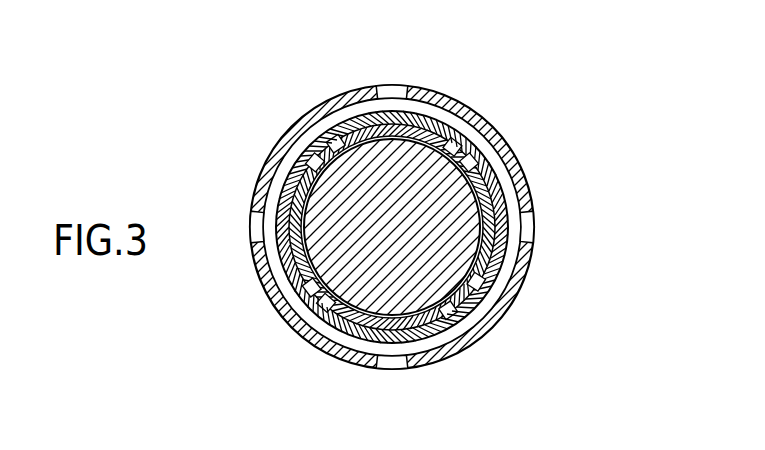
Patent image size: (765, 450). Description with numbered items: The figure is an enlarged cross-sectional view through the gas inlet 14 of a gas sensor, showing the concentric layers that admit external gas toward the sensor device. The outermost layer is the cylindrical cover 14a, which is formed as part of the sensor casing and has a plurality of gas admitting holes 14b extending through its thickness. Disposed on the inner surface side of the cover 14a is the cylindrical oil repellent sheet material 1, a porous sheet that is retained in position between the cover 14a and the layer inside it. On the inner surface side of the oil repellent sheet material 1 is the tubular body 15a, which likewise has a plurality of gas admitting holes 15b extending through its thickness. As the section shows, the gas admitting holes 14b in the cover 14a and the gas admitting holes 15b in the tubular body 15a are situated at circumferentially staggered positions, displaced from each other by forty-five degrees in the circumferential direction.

The oil repellent sheet material 1 is at (488, 287).
The gas inlet 14 is at (446, 187).
The cylindrical cover 14a is at (536, 169).
The gas admitting holes 14b is at (543, 232).
The tubular body 15a is at (389, 125).
The gas admitting holes 15b is at (313, 300).